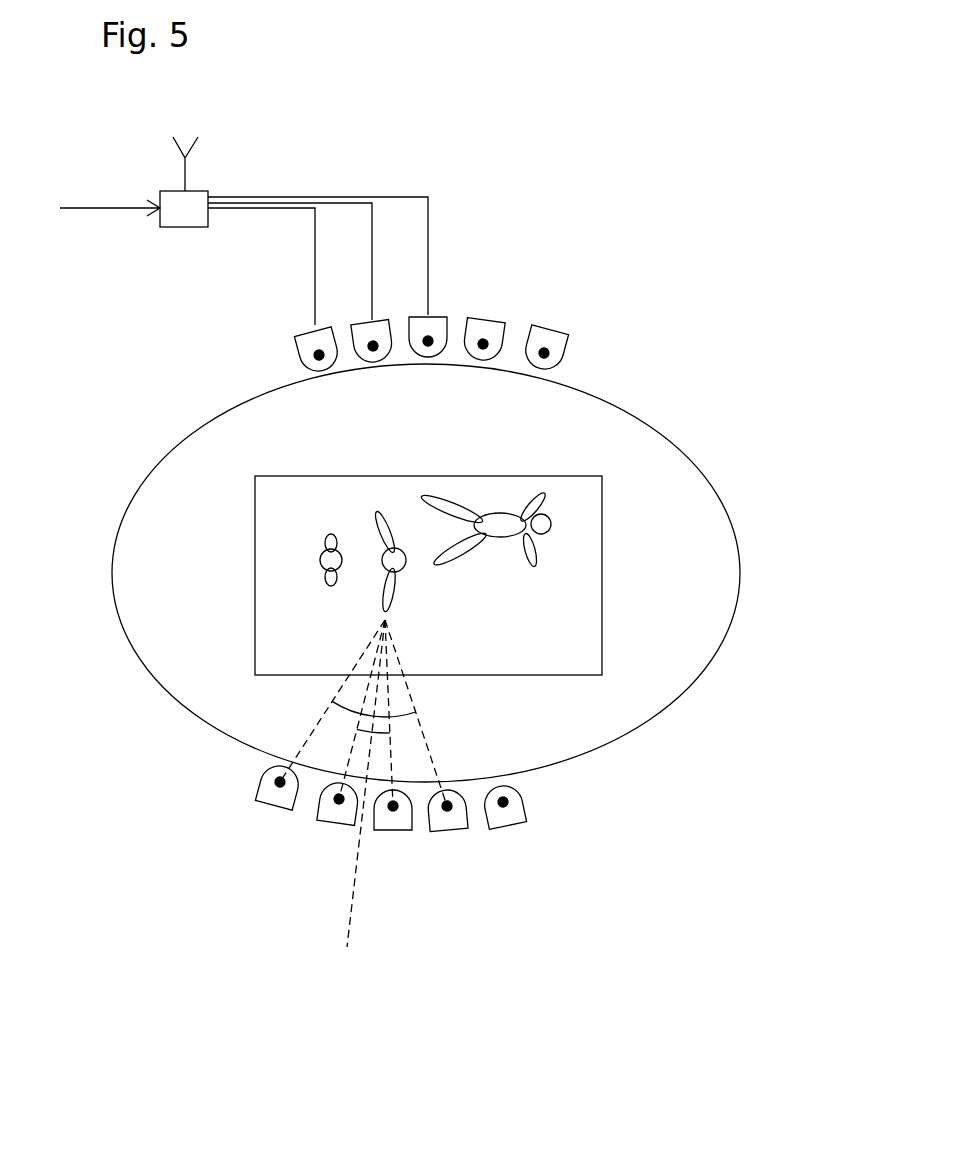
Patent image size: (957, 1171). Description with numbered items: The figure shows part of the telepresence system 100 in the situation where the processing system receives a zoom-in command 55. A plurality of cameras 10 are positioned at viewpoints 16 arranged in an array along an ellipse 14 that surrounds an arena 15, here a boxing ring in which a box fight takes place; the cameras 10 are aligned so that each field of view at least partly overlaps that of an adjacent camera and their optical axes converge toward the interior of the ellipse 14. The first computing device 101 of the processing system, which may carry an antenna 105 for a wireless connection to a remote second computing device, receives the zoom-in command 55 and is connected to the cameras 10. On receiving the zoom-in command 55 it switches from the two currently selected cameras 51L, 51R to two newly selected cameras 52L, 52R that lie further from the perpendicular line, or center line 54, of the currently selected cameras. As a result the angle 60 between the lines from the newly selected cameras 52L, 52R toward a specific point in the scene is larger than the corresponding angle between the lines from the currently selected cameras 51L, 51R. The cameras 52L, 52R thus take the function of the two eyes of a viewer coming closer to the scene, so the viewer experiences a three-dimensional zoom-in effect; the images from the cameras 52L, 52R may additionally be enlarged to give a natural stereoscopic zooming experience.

The telepresence system 100 is at (520, 162).
The camera 10 is at (567, 333).
The viewpoint 16 is at (544, 353).
The ellipse 14 is at (692, 460).
The arena 15 is at (255, 508).
The first computing device 101 is at (175, 227).
The antenna 105 is at (200, 143).
The zoom-in command 55 is at (89, 208).
The angle 60 is at (417, 715).
The newly selected left camera 52L is at (267, 807).
The currently selected left camera 51L is at (327, 823).
The currently selected right camera 51R is at (388, 830).
The newly selected right camera 52R is at (453, 830).
The center line 54 is at (347, 947).